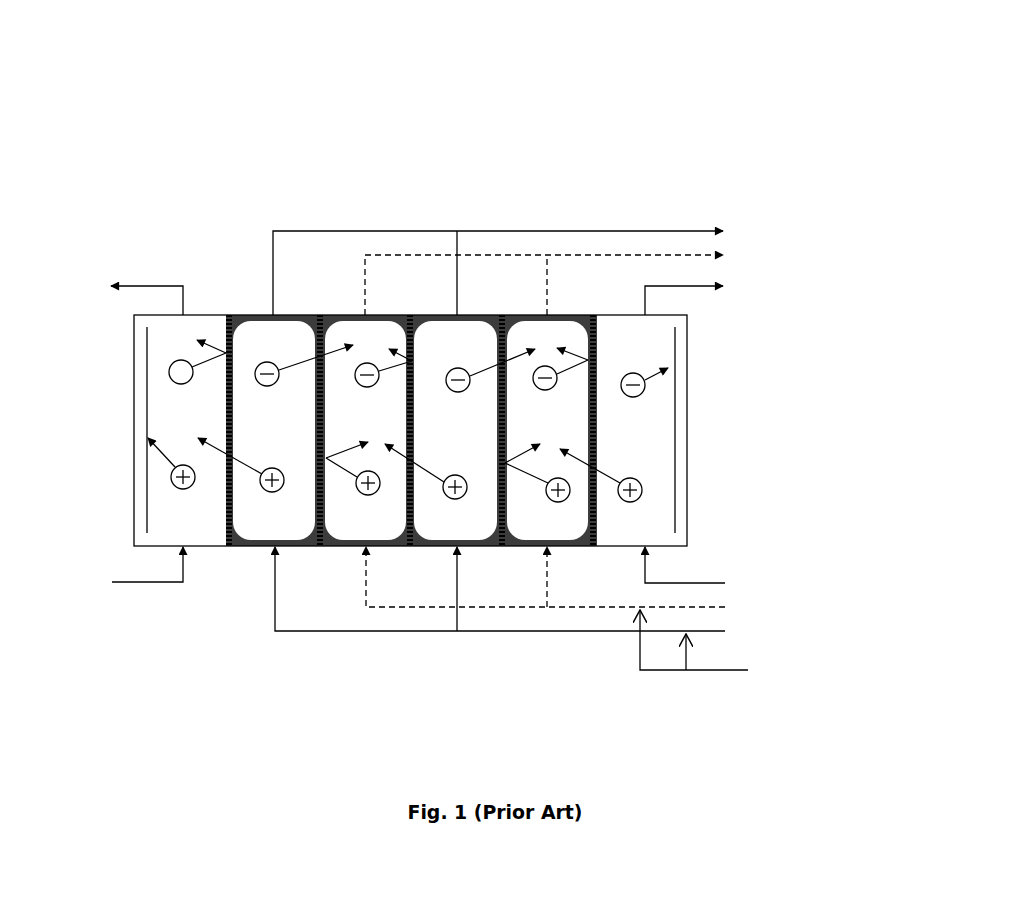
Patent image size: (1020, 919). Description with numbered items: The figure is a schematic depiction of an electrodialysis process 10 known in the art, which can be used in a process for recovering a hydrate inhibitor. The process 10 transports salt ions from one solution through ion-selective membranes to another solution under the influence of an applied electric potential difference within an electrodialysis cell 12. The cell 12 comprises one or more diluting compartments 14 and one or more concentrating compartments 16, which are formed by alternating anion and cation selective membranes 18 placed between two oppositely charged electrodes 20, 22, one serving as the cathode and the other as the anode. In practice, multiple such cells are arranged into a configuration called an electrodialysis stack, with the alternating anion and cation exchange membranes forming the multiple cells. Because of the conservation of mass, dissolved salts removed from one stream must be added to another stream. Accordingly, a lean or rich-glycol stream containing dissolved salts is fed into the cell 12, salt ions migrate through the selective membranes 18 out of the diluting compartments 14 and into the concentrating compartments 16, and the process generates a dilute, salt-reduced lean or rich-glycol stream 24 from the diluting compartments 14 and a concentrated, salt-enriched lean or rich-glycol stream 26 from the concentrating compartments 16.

The electrodialysis process 10 is at (458, 140).
The electrodialysis cell 12 is at (480, 313).
The diluting compartments 14 is at (432, 537).
The concentrating compartments 16 is at (540, 505).
The anion and cation selective membranes 18 is at (505, 421).
The electrode 20 is at (147, 467).
The electrode 22 is at (676, 455).
The dilute lean or rich-glycol stream 24 is at (515, 266).
The concentrated lean or rich-glycol stream 26 is at (561, 279).